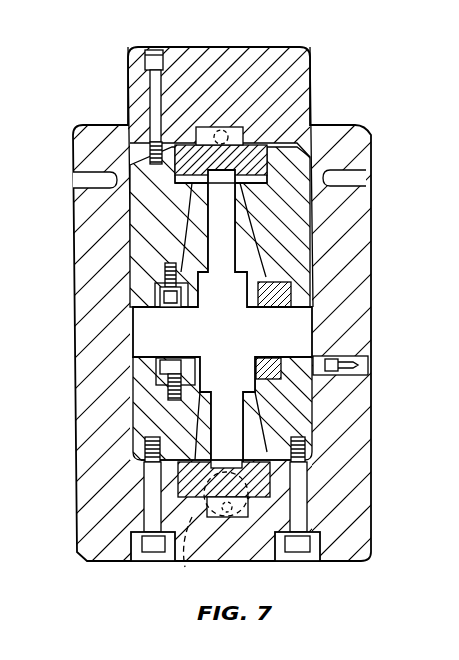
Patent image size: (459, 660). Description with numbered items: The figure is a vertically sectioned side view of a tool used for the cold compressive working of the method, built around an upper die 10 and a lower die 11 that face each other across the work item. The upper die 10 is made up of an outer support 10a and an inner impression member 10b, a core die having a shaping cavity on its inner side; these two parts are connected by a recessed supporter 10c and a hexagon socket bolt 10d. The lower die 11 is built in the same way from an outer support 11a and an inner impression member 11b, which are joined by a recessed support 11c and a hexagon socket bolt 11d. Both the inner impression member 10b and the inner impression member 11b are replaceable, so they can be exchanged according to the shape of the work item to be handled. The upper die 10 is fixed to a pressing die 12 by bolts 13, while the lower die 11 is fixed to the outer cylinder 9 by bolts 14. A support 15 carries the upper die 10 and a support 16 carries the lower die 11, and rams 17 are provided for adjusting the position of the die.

The outer cylinder 9 is at (360, 312).
The upper die 10 is at (318, 258).
The outer support 10a is at (140, 168).
The inner impression member 10b is at (197, 212).
The recessed supporter 10c is at (162, 292).
The hexagon socket bolt 10d is at (156, 298).
The lower die 11 is at (318, 411).
The outer support 11a is at (138, 436).
The inner impression member 11b is at (198, 407).
The recessed support 11c is at (185, 376).
The hexagon socket bolt 11d is at (160, 366).
The pressing die 12 is at (302, 72).
The bolts 13 is at (152, 87).
The bolts 14 is at (303, 496).
The support 15 is at (183, 148).
The support 16 is at (185, 483).
The rams 17 is at (238, 126).